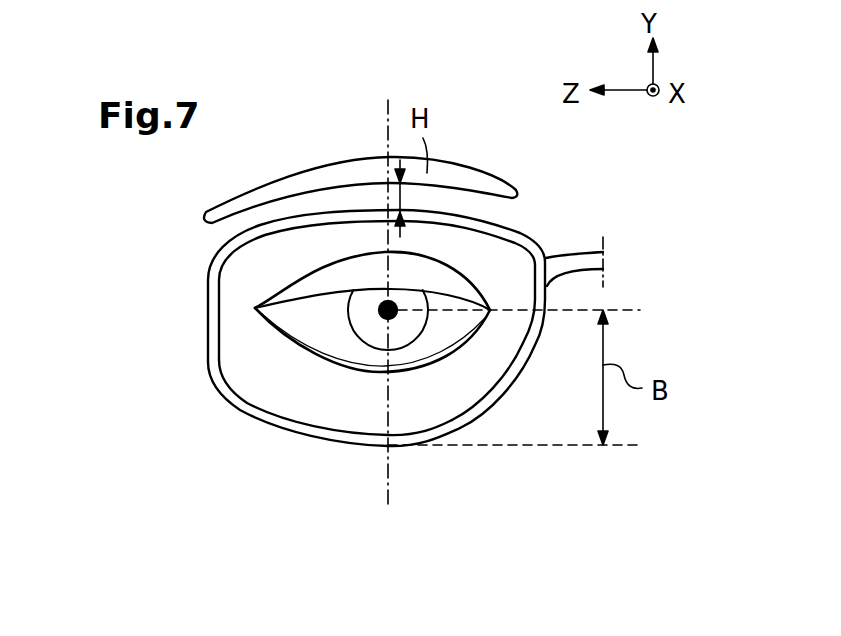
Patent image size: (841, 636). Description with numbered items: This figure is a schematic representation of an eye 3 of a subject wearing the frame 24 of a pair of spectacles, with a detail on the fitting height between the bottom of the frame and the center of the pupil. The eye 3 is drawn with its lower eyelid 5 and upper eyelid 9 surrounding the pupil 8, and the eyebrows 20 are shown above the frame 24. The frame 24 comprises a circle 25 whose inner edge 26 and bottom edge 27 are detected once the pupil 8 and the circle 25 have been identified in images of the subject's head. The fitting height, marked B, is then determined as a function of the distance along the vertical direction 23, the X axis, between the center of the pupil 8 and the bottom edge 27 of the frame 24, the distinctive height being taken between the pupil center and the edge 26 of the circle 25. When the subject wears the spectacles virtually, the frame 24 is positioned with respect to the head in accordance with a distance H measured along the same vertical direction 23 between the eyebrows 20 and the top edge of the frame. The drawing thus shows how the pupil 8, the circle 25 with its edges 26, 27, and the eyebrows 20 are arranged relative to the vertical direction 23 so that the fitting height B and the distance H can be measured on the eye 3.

The eye 3 is at (287, 287).
The lower eyelid 5 is at (297, 340).
The pupil 8 is at (384, 312).
The upper eyelid 9 is at (438, 273).
The eyebrows 20 is at (476, 176).
The vertical direction 23 is at (387, 120).
The frame 24 is at (528, 229).
The circle 25 is at (208, 307).
The inner edge 26 is at (590, 243).
The bottom edge 27 is at (280, 418).